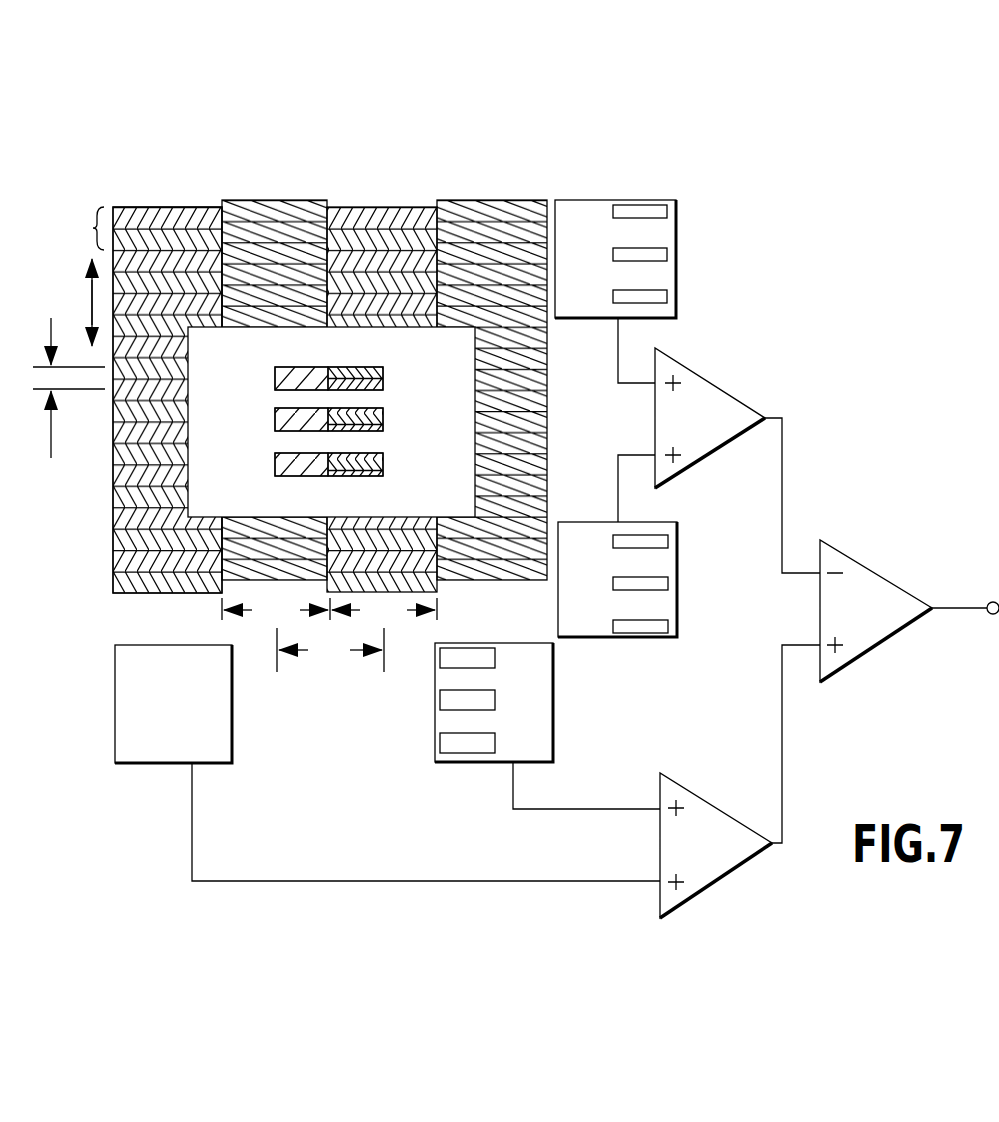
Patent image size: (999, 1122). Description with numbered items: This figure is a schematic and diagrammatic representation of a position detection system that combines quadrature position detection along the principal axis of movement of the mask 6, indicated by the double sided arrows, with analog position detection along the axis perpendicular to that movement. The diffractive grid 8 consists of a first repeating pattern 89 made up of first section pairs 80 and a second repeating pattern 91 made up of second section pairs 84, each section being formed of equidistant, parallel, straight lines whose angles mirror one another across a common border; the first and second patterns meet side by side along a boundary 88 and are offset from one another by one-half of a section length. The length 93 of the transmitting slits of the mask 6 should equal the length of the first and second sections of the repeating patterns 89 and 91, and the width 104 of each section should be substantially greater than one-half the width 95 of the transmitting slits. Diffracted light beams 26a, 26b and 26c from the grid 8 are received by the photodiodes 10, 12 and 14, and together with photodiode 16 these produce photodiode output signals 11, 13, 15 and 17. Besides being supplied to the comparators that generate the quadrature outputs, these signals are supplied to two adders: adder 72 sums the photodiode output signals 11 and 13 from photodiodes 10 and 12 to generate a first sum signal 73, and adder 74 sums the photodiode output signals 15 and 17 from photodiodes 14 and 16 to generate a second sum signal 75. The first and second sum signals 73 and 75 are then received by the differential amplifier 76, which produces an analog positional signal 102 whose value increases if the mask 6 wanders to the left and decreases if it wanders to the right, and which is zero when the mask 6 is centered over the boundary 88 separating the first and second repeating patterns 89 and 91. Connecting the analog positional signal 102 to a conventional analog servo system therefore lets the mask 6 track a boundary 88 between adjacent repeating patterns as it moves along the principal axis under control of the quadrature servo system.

The mask 6 is at (180, 467).
The diffractive grid 8 is at (341, 98).
The photodiode 10 is at (612, 189).
The photodiode output signal 11 is at (618, 357).
The photodiode 12 is at (608, 637).
The photodiode output signal 13 is at (618, 458).
The photodiode 14 is at (555, 738).
The photodiode output signal 15 is at (513, 790).
The photodiode 16 is at (232, 735).
The photodiode output signal 17 is at (192, 822).
The diffracted light beam 26a is at (660, 212).
The diffracted light beam 26b is at (665, 542).
The diffracted light beam 26c is at (452, 742).
The adder 72 is at (712, 378).
The first sum signal 73 is at (782, 458).
The adder 74 is at (720, 808).
The second sum signal 75 is at (783, 746).
The differential amplifier 76 is at (893, 638).
The first section pair 80 is at (84, 228).
The second section pair 84 is at (550, 408).
The boundary 88 is at (222, 207).
The first repeating pattern 89 is at (163, 201).
The second repeating pattern 91 is at (276, 187).
The length of transmitting slits 93 is at (69, 372).
The width of transmitting slits 95 is at (330, 650).
The analog positional signal 102 is at (965, 608).
The width of section 104 is at (329, 610).